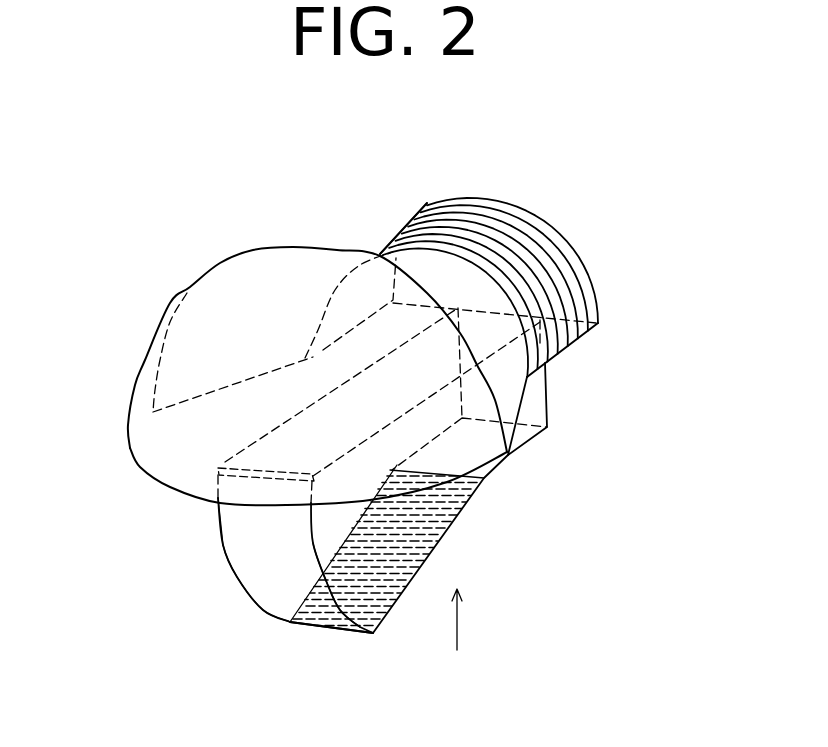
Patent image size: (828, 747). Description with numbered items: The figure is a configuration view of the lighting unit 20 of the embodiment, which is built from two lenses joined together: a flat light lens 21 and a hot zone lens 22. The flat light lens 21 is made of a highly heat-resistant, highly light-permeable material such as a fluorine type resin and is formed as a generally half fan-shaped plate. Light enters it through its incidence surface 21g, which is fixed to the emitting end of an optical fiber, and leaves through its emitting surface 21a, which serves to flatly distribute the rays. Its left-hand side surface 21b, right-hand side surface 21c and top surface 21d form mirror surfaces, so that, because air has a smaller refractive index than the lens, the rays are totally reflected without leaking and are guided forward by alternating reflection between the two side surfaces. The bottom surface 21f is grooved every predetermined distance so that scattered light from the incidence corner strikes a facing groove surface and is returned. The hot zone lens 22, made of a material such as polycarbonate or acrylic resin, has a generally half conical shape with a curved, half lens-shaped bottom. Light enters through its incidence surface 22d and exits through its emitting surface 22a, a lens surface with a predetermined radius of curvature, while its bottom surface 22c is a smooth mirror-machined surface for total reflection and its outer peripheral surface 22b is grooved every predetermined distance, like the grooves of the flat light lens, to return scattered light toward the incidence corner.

The lighting unit 20 is at (473, 687).
The flat light lens 21 is at (252, 555).
The emitting surface 21a is at (268, 585).
The left-hand side surface 21b is at (323, 532).
The right-hand side surface 21c is at (220, 540).
The top surface 21d is at (352, 430).
The bottom surface 21f is at (433, 547).
The incidence surface 21g is at (535, 388).
The hot zone lens 22 is at (275, 287).
The emitting surface 22a is at (172, 448).
The outer peripheral surface 22b is at (430, 228).
The bottom surface 22c is at (227, 433).
The incidence surface 22d is at (547, 223).